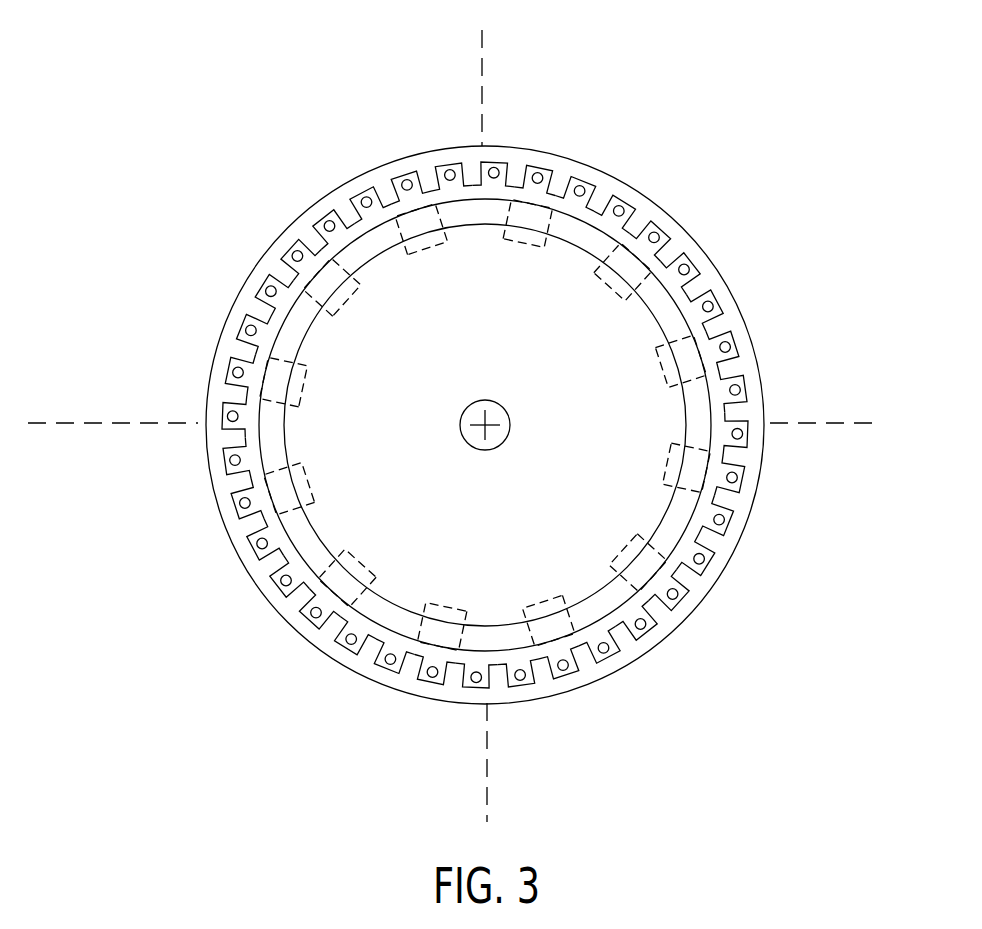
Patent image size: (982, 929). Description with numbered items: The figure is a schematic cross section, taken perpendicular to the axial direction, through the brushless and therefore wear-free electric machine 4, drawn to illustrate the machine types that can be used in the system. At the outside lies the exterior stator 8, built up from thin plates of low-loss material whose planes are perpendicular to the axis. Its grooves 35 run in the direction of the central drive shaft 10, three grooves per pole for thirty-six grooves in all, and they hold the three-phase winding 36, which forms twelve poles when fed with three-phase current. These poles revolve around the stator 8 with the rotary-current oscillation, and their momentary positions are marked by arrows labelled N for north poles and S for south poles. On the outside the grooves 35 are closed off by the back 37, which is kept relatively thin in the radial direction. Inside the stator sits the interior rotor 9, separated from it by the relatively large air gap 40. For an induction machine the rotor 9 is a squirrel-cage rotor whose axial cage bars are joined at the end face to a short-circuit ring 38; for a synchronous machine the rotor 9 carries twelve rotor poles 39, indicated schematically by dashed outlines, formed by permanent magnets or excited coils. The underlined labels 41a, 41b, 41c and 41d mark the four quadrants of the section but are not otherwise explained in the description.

The electric machine 4 is at (694, 66).
The stator 8 is at (499, 425).
The rotor 9 is at (523, 425).
The drive shaft 10 is at (461, 406).
The grooves 35 is at (746, 559).
The three-phase winding 36 is at (665, 665).
The back 37 is at (364, 684).
The short-circuit ring 38 is at (432, 425).
The rotor poles 39 is at (368, 539).
The air gap 40 is at (224, 309).
The sector a 41a is at (297, 261).
The sector b 41b is at (655, 260).
The sector c 41c is at (635, 639).
The sector d 41d is at (333, 638).
The north pole N is at (396, 157).
The south pole S is at (542, 146).